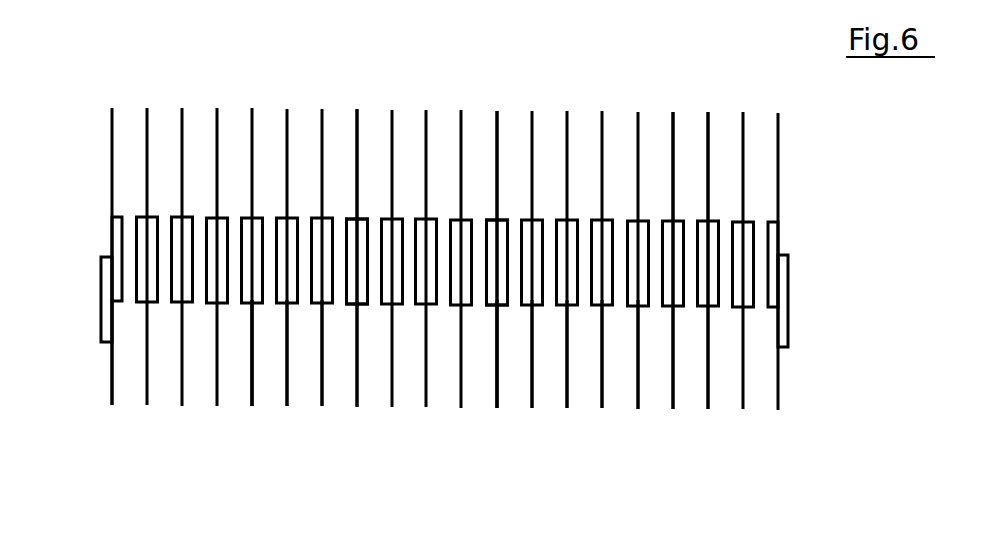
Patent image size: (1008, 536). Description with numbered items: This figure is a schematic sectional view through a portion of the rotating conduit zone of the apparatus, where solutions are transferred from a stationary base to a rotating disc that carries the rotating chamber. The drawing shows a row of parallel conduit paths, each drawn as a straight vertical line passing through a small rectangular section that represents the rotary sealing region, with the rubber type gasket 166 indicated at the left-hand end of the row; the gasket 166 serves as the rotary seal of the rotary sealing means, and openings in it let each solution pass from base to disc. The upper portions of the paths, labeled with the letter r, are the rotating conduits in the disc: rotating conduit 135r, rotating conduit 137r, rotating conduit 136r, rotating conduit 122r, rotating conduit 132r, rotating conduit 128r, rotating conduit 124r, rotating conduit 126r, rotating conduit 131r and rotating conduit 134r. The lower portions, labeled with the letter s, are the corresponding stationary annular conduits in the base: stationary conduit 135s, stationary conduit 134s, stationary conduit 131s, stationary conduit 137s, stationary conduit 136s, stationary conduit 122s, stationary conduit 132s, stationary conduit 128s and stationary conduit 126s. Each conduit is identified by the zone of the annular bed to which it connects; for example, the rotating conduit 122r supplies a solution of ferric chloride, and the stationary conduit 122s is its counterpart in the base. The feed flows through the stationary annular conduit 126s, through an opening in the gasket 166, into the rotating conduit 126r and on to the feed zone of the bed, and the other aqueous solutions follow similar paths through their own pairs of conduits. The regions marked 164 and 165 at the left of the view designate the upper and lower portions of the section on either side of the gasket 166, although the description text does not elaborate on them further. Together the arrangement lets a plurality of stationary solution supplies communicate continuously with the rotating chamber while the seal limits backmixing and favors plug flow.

The first conductor bus 164 is at (70, 162).
The second conductor bus 165 is at (70, 373).
The rubber type gasket 166 is at (100, 272).
The rotating conduit 135r is at (133, 122).
The rotating conduit 137r is at (240, 122).
The rotating conduit 136r is at (268, 118).
The rotating conduit 122r is at (307, 117).
The rotating conduit 132r is at (342, 118).
The rotating conduit 128r is at (445, 118).
The rotating conduit 124r is at (483, 118).
The rotating conduit 126r is at (520, 118).
The rotating conduit 131r is at (685, 125).
The rotating conduit 134r is at (722, 125).
The stationary annular conduit 135s is at (130, 400).
The stationary annular conduit 134s is at (165, 402).
The stationary annular conduit 131s is at (203, 398).
The stationary annular conduit 137s is at (235, 398).
The stationary annular conduit 136s is at (263, 402).
The stationary annular conduit 122s is at (340, 447).
The stationary annular conduit 132s is at (335, 402).
The stationary annular conduit 128s is at (444, 402).
The stationary annular conduit 126s is at (514, 402).